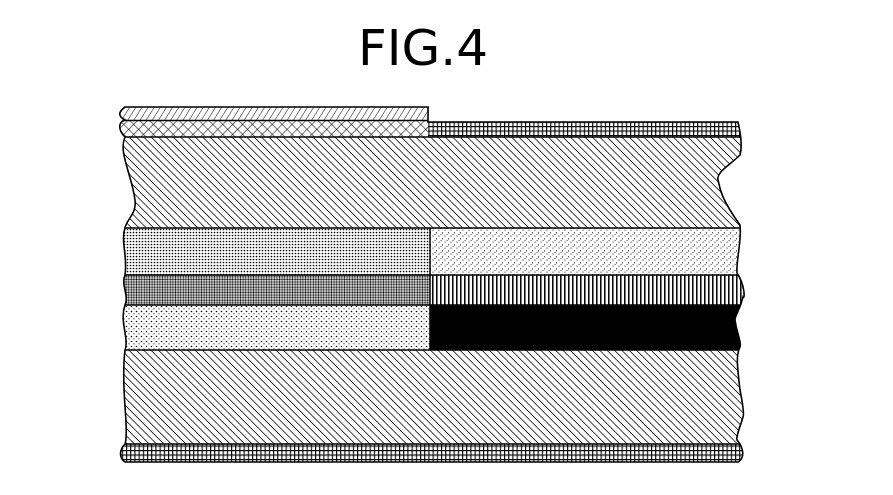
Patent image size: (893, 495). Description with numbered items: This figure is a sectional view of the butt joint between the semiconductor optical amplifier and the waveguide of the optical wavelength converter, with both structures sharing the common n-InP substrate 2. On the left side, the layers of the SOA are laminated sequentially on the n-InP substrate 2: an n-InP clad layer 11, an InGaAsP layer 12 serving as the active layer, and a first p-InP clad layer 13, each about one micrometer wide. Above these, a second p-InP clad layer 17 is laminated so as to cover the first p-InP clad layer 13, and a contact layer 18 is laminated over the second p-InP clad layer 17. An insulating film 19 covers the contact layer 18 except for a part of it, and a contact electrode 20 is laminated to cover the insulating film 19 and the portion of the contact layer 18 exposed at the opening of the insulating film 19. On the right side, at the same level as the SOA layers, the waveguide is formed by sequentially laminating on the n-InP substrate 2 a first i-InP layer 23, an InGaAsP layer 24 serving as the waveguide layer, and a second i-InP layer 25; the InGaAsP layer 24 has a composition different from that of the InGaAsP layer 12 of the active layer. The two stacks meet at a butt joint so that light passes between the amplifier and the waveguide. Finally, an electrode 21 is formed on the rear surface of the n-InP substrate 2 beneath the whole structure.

The n-InP substrate 2 is at (695, 410).
The n-InP clad layer 11 is at (130, 340).
The InGaAsP layer 12 is at (155, 290).
The first p-InP clad layer 13 is at (190, 262).
The second p-InP clad layer 17 is at (694, 182).
The contact layer 18 is at (138, 121).
The insulating film 19 is at (676, 123).
The contact electrode 20 is at (330, 112).
The electrode 21 is at (732, 443).
The first i-InP layer 23 is at (733, 320).
The InGaAsP layer 24 is at (708, 292).
The second i-InP layer 25 is at (673, 256).